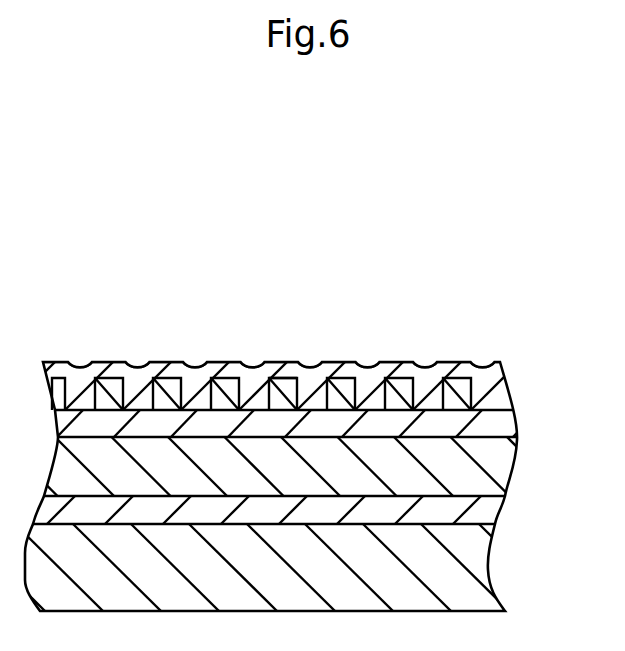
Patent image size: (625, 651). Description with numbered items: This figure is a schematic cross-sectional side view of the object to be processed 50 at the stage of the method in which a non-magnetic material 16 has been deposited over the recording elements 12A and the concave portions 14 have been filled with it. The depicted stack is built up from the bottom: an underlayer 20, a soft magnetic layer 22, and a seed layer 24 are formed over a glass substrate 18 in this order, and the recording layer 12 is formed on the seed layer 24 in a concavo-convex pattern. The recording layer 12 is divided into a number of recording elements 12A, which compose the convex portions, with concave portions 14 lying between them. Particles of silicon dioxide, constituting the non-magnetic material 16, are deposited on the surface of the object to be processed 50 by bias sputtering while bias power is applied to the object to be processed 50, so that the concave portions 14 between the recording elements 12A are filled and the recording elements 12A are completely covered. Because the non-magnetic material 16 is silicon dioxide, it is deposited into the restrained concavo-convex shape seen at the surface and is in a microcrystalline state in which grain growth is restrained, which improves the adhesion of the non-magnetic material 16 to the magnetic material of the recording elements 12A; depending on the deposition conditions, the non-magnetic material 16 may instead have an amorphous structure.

The object to be processed 50 is at (298, 201).
The non-magnetic material 16 is at (506, 370).
The recording layer 12 is at (515, 395).
The recording elements 12A is at (283, 383).
The concave portions 14 is at (250, 385).
The seed layer 24 is at (518, 425).
The soft magnetic layer 22 is at (515, 468).
The underlayer 20 is at (502, 513).
The glass substrate 18 is at (490, 568).